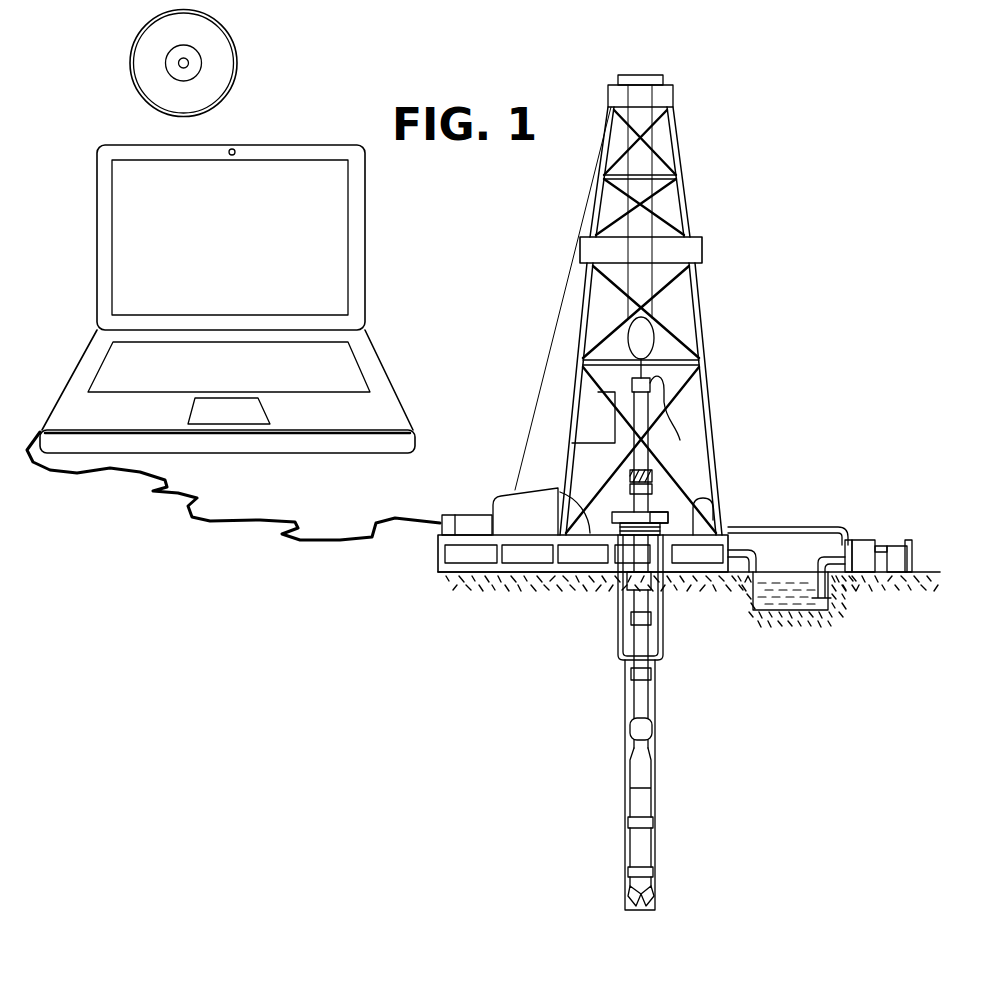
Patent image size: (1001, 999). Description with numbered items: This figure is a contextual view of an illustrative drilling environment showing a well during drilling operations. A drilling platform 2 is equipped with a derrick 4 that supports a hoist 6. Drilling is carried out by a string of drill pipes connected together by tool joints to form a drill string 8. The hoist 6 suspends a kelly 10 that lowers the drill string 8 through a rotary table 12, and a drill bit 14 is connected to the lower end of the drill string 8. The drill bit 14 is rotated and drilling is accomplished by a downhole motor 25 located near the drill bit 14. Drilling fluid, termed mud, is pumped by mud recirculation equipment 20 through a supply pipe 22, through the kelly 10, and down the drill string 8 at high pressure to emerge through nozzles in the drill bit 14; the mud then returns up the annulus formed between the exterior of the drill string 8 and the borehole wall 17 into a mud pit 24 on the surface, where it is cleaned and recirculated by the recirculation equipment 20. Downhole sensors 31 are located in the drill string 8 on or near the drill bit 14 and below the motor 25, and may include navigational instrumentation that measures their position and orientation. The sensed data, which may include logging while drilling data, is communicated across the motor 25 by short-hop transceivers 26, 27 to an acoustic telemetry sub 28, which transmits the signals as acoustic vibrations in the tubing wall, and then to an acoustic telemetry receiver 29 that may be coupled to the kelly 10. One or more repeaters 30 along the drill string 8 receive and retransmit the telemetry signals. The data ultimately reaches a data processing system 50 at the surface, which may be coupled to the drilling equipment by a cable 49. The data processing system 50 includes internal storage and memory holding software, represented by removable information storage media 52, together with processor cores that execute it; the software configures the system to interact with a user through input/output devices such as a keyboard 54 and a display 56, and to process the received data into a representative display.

The drilling platform 2 is at (437, 546).
The derrick 4 is at (683, 203).
The hoist 6 is at (662, 327).
The drill string 8 is at (638, 683).
The kelly 10 is at (640, 403).
The rotary table 12 is at (658, 510).
The drill bit 14 is at (657, 903).
The borehole wall 17 is at (628, 718).
The mud recirculation equipment 20 is at (860, 543).
The supply pipe 22 is at (800, 527).
The mud pit 24 is at (770, 595).
The downhole motor 25 is at (645, 845).
The short-hop transceiver 26 is at (635, 868).
The short-hop transceiver 27 is at (638, 828).
The acoustic telemetry sub 28 is at (643, 803).
The acoustic telemetry receiver 29 is at (647, 473).
The repeater 30 is at (643, 727).
The downhole sensors 31 is at (647, 875).
The cable 49 is at (190, 518).
The data processing system 50 is at (240, 395).
The removable information storage media 52 is at (237, 61).
The keyboard 54 is at (352, 388).
The display 56 is at (365, 235).